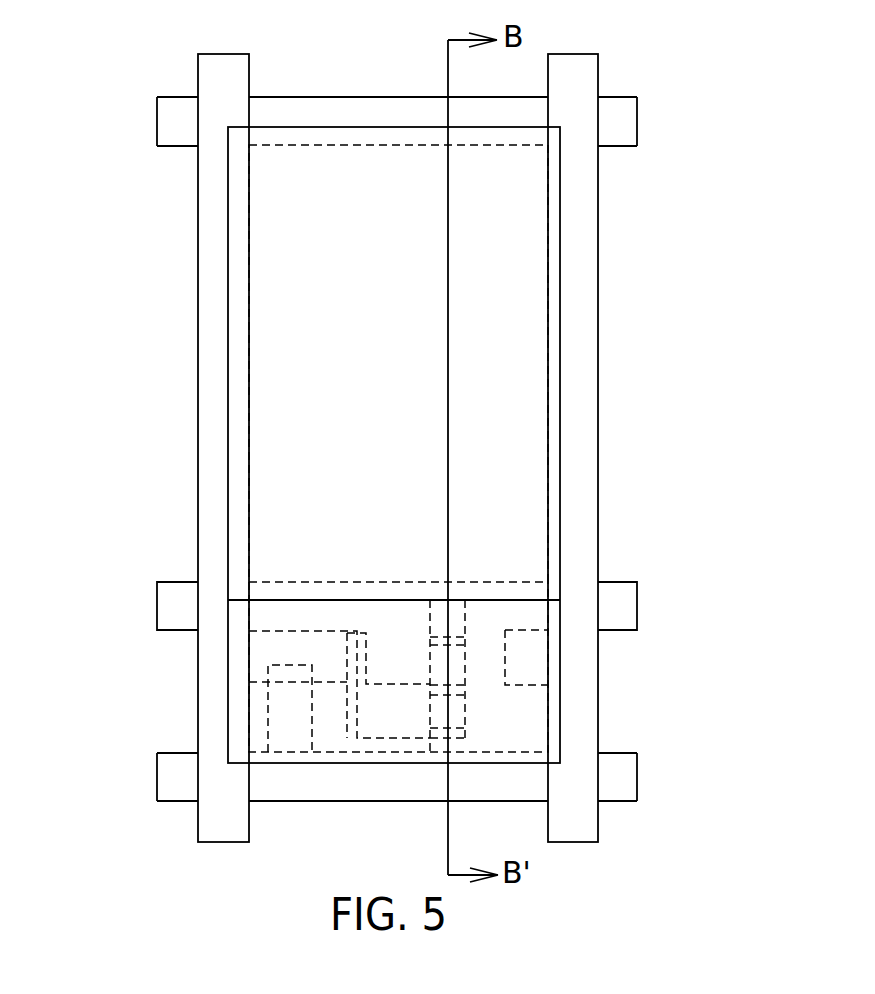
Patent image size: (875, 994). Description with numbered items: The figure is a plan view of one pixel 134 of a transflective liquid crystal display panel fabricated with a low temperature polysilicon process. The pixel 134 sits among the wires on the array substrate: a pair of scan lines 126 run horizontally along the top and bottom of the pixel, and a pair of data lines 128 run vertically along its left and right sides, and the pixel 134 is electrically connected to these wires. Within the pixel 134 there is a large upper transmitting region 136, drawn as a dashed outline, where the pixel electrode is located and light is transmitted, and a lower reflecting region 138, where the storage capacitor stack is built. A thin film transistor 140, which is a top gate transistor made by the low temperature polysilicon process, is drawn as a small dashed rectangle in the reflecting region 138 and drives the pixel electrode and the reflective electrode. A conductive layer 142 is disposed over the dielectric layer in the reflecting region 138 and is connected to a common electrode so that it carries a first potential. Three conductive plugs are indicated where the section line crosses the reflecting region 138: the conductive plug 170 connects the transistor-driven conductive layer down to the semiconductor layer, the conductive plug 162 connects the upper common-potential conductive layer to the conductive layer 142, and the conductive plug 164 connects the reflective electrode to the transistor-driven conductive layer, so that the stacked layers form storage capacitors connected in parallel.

The scan line 126 is at (165, 118).
The data line 128 is at (578, 462).
The pixel 134 is at (748, 163).
The transmitting region 136 is at (518, 377).
The reflecting region 138 is at (453, 667).
The thin film transistor 140 is at (290, 733).
The conductive layer 142 is at (622, 603).
The conductive plug 162 is at (453, 717).
The conductive plug 164 is at (453, 613).
The conductive plug 170 is at (456, 670).